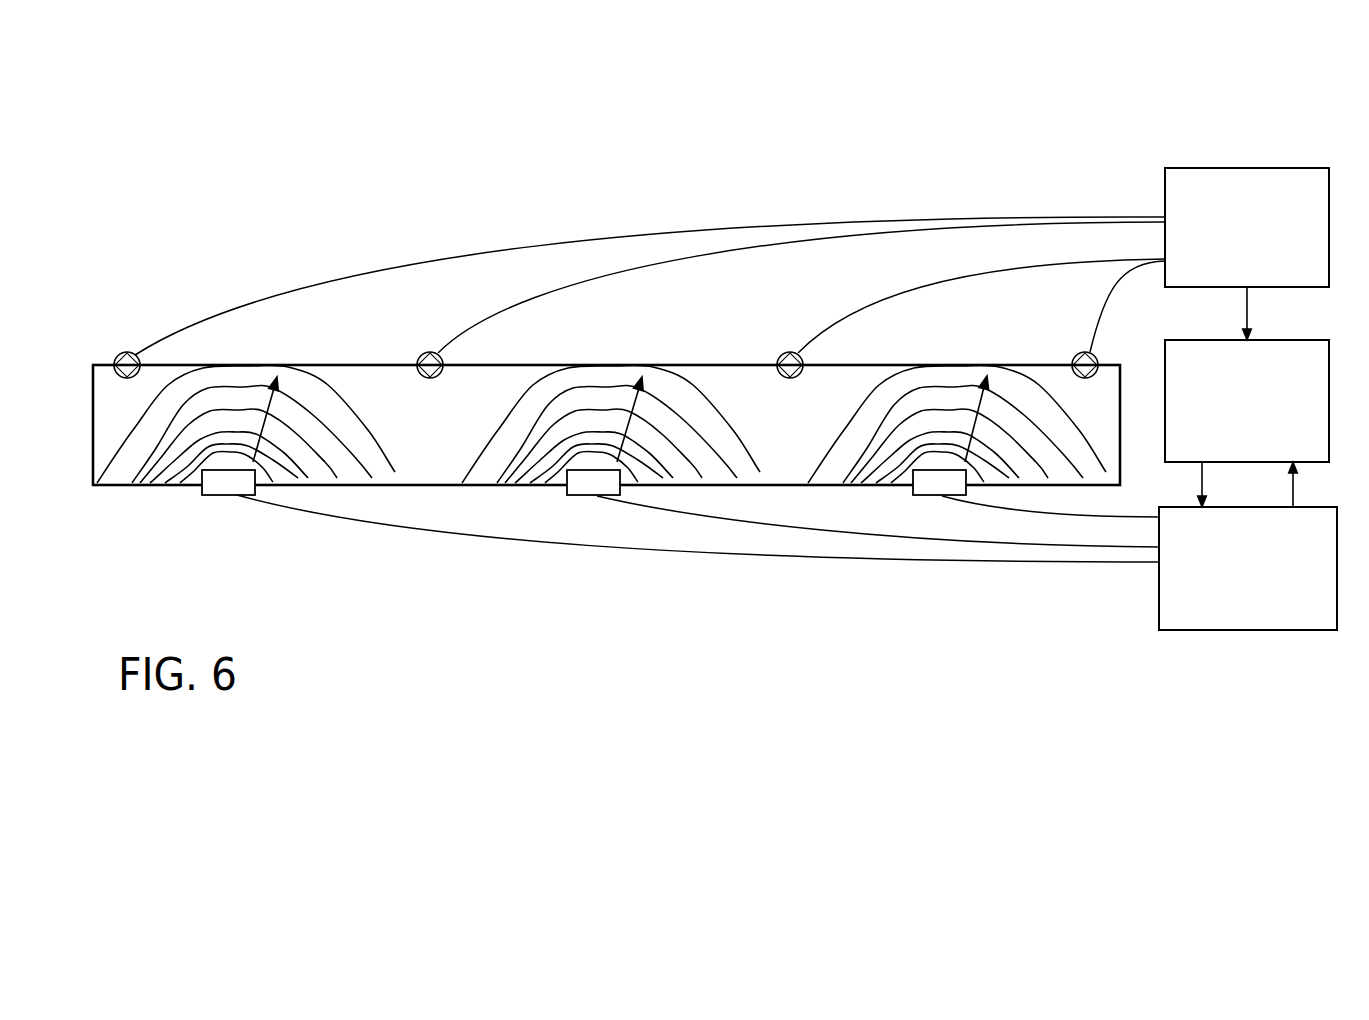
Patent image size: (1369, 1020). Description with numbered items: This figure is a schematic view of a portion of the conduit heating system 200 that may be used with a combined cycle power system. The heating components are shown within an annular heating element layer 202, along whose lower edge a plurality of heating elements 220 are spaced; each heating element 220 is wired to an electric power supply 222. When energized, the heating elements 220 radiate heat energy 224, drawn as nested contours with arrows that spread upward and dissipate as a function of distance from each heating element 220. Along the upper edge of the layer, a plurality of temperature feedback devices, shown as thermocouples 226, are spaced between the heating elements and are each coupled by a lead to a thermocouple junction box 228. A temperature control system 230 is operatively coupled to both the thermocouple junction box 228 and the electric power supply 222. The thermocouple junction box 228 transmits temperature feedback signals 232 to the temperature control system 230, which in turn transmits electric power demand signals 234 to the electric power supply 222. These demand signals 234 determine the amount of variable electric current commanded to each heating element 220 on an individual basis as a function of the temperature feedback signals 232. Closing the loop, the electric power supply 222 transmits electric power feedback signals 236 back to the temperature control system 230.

The conduit heating system 200 is at (988, 108).
The annular heating element layer 202 is at (368, 226).
The heating elements 220 is at (921, 498).
The electric power supply 222 is at (1268, 620).
The heat energy 224 is at (263, 407).
The thermocouples 226 is at (118, 355).
The thermocouple junction box 228 is at (1295, 281).
The temperature control system 230 is at (1267, 455).
The temperature feedback signals 232 is at (1250, 304).
The electric power demand signals 234 is at (1202, 480).
The electric power feedback signals 236 is at (1294, 490).